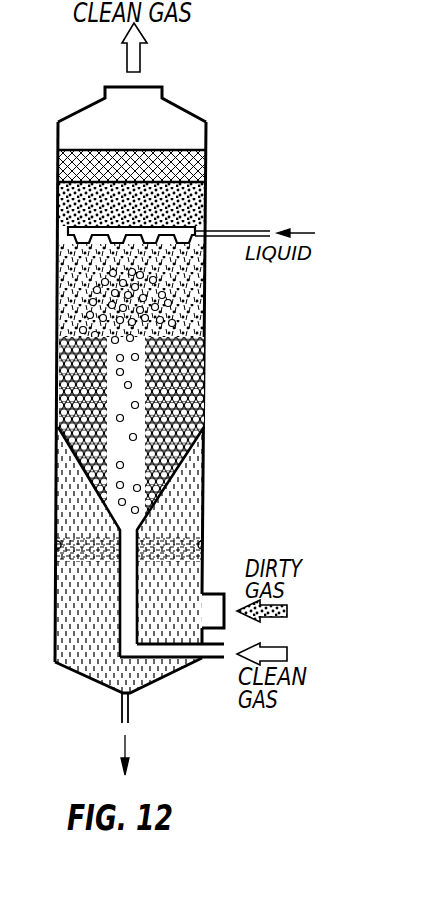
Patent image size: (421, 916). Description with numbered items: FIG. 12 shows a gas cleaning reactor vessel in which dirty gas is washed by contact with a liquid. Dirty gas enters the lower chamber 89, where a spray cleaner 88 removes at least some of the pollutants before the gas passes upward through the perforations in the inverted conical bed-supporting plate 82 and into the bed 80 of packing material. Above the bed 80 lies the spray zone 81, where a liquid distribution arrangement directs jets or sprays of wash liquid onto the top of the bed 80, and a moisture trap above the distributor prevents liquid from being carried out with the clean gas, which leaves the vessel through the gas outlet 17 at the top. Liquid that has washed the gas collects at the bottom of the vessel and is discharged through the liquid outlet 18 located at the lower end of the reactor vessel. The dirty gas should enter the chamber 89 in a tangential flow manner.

The gas outlet 17 is at (140, 92).
The liquid outlet 18 is at (121, 712).
The bed 80 is at (180, 368).
The spray zone 81 is at (206, 318).
The inverted conical bed-supporting plate 82 is at (173, 465).
The spray cleaner 88 is at (203, 521).
The chamber 89 is at (93, 633).